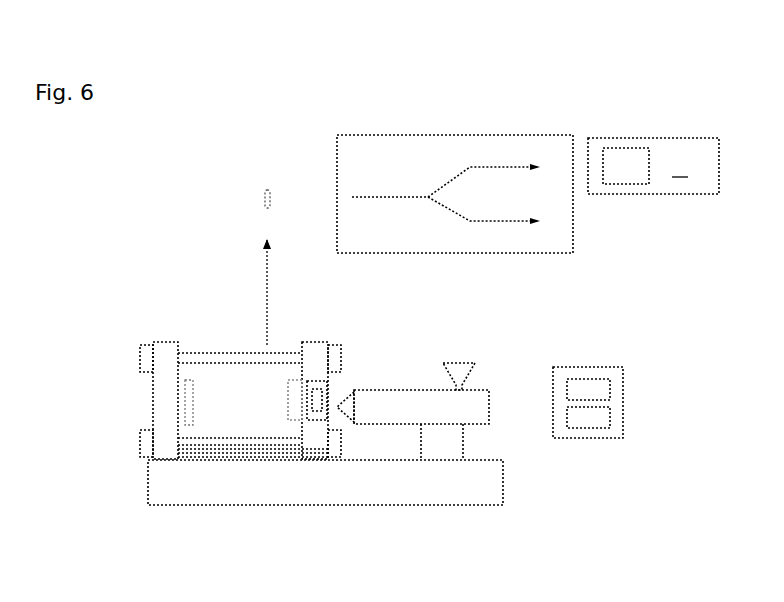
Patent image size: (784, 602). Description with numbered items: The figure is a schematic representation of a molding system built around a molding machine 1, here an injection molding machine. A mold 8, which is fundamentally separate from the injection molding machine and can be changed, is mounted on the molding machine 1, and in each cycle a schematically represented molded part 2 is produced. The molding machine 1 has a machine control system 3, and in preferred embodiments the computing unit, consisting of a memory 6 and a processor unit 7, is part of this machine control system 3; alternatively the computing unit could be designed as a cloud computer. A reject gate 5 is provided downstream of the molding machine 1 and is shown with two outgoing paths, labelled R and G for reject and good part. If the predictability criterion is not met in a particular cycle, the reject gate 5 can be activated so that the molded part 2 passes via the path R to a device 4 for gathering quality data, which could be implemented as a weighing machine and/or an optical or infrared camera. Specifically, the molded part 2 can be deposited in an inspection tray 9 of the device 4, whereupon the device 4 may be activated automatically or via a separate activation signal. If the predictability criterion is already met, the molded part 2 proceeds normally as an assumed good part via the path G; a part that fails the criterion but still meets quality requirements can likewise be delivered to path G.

The molding machine 1 is at (212, 312).
The molded part 2 is at (277, 180).
The machine control system 3 is at (316, 432).
The device for gathering quality data 4 is at (653, 166).
The reject gate 5 is at (477, 126).
The memory 6 is at (586, 420).
The processor unit 7 is at (586, 390).
The mold 8 is at (200, 432).
The inspection tray 9 is at (630, 162).